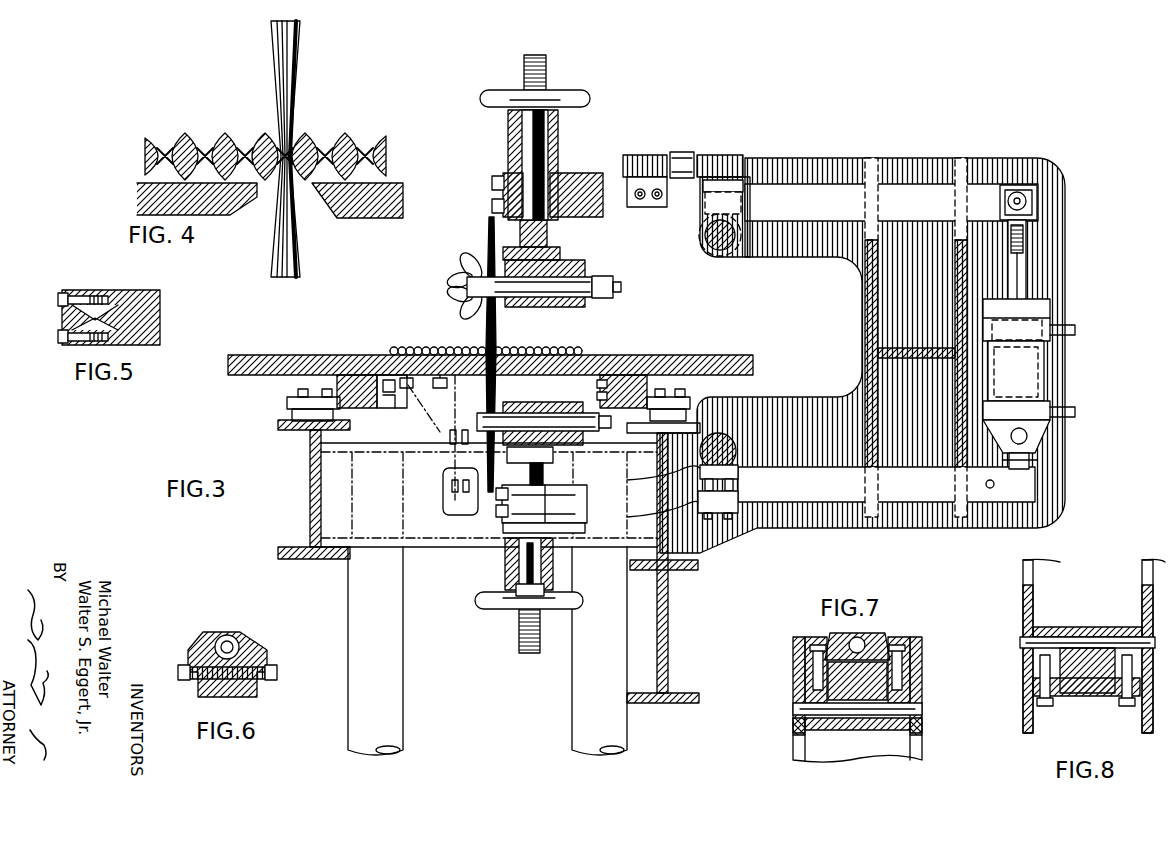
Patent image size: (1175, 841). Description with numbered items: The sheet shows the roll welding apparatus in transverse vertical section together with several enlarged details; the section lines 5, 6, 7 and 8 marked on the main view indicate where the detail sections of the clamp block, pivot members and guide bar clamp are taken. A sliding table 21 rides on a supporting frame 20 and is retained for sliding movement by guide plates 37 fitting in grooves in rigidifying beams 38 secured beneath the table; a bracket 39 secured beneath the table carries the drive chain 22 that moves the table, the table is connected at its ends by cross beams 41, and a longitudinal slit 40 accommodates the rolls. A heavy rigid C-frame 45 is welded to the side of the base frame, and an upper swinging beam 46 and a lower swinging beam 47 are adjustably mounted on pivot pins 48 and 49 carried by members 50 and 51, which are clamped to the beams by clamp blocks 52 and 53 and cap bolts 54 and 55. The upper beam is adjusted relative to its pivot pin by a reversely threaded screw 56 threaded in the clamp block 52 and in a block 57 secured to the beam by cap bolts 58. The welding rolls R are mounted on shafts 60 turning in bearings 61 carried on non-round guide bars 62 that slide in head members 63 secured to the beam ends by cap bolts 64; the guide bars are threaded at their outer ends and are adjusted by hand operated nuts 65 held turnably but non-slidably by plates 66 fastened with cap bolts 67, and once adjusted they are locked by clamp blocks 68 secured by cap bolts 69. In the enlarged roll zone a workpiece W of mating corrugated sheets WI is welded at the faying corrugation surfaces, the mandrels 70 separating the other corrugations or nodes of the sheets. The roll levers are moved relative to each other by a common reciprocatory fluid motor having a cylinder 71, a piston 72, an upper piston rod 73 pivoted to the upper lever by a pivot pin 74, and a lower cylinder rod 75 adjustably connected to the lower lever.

In FIG. 3, the frame 20 is at (303, 518).
In FIG. 4, the table 21 is at (390, 183).
In FIG. 3, the table 21 is at (320, 355).
In FIG. 3, the drive chain 22 is at (448, 475).
In FIG. 3, the guide plates 37 is at (298, 397).
In FIG. 3, the rigidifying beams 38 is at (362, 408).
In FIG. 3, the bracket 39 is at (448, 436).
In FIG. 3, the longitudinal slit 40 is at (482, 382).
In FIG. 3, the cross beams 41 is at (382, 408).
In FIG. 3, the C-frame 45 is at (800, 158).
In FIG. 7, the C-frame 45 is at (922, 670).
In FIG. 8, the C-frame 45 is at (1023, 716).
In FIG. 5, the upper swinging beam 46 is at (154, 300).
In FIG. 3, the upper swinging beam 46 is at (848, 186).
In FIG. 6, the upper swinging beam 46 is at (252, 692).
In FIG. 7, the upper swinging beam 46 is at (830, 728).
In FIG. 3, the lower swinging beam 47 is at (820, 502).
In FIG. 8, the lower swinging beam 47 is at (1075, 694).
In FIG. 3, the pivot pin 48 is at (746, 255).
In FIG. 7, the pivot pin 48 is at (924, 706).
In FIG. 3, the pivot pin 49 is at (735, 448).
In FIG. 8, the pivot pin 49 is at (1020, 644).
In FIG. 3, the pivot pin carrying member 50 is at (705, 225).
In FIG. 7, the pivot pin carrying member 50 is at (878, 730).
In FIG. 3, the pivot pin carrying member 51 is at (740, 478).
In FIG. 8, the pivot pin carrying member 51 is at (1056, 627).
In FIG. 3, the clamp block 52 is at (740, 154).
In FIG. 7, the clamp block 52 is at (888, 634).
In FIG. 3, the clamp block 53 is at (705, 505).
In FIG. 8, the clamp block 53 is at (1095, 706).
In FIG. 3, the cap bolts 54 is at (745, 190).
In FIG. 3, the cap bolts 55 is at (704, 486).
In FIG. 7, the cap bolts 55 is at (793, 650).
In FIG. 8, the cap bolts 55 is at (1048, 708).
In FIG. 3, the reversely threaded screw 56 is at (686, 150).
In FIG. 6, the reversely threaded screw 56 is at (235, 636).
In FIG. 7, the reversely threaded screw 56 is at (832, 638).
In FIG. 3, the block 57 is at (630, 156).
In FIG. 6, the block 57 is at (262, 650).
In FIG. 3, the cap bolts 58 is at (652, 201).
In FIG. 6, the cap bolts 58 is at (184, 666).
In FIG. 3, the shafts 60 is at (620, 290).
In FIG. 3, the bearings 61 is at (560, 306).
In FIG. 3, the guide bars 62 is at (520, 140).
In FIG. 3, the head members 63 is at (512, 118).
In FIG. 3, the cap bolts 64 is at (580, 172).
In FIG. 3, the hand operated nuts 65 is at (570, 100).
In FIG. 3, the plates 66 is at (523, 100).
In FIG. 3, the cap bolts 67 is at (494, 98).
In FIG. 5, the clamp blocks 68 is at (58, 325).
In FIG. 3, the clamp blocks 68 is at (506, 176).
In FIG. 5, the cap bolts 69 is at (58, 299).
In FIG. 3, the cap bolts 69 is at (495, 194).
In FIG. 4, the mandrels 70 is at (262, 146).
In FIG. 3, the cylinder 71 is at (1046, 380).
In FIG. 3, the piston 72 is at (1052, 353).
In FIG. 3, the upper piston rod 73 is at (1028, 275).
In FIG. 3, the pivot pin 74 is at (1036, 200).
In FIG. 3, the lower cylinder rod 75 is at (1032, 458).
In FIG. 4, the welding rolls R is at (302, 100).
In FIG. 3, the welding rolls R is at (496, 320).
In FIG. 4, the workpiece W is at (366, 137).
In FIG. 3, the workpiece W is at (584, 354).
In FIG. 4, the corrugated sheets WI is at (308, 145).
In FIG. 3, the section line 5- 5 is at (600, 207).
In FIG. 3, the section line 6- 6 is at (666, 140).
In FIG. 3, the section line 7- 7 is at (730, 140).
In FIG. 3, the section line 8- 8 is at (730, 391).